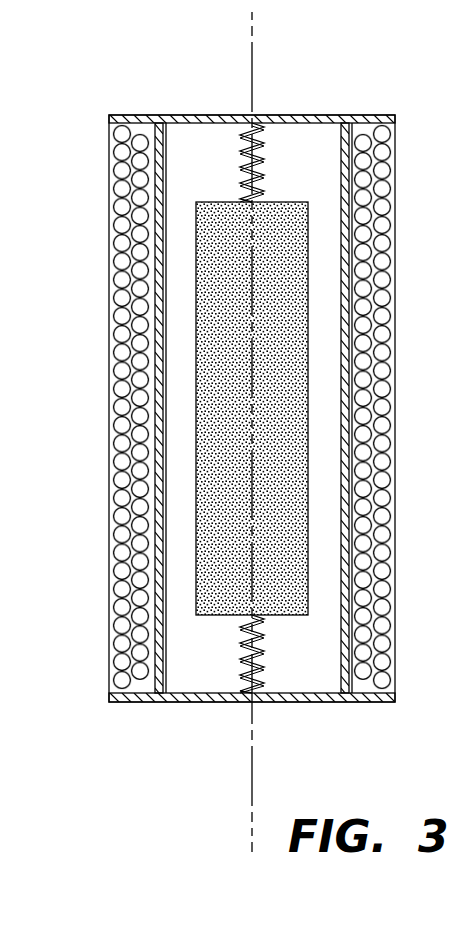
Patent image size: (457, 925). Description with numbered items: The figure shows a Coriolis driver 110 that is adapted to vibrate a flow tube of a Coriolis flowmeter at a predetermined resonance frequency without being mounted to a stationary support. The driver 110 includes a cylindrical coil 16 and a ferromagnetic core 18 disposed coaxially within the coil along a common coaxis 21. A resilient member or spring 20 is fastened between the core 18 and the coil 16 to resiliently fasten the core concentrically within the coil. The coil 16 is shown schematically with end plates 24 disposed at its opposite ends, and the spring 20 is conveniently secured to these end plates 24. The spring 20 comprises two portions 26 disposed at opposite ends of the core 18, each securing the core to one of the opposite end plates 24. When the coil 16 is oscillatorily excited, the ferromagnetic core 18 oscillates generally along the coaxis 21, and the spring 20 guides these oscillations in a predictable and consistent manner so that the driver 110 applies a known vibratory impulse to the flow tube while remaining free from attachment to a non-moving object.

The driver 110 is at (78, 103).
The coil 16 is at (378, 127).
The ferromagnetic core 18 is at (293, 207).
The spring 20 is at (227, 152).
The coaxis 21 is at (210, 432).
The end plates 24 is at (166, 115).
The spring portions 26 is at (262, 158).